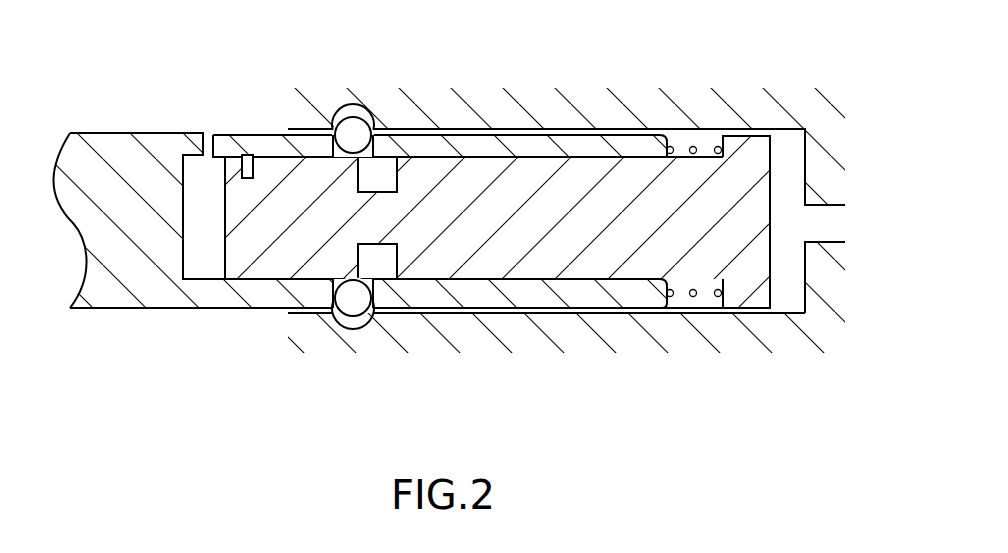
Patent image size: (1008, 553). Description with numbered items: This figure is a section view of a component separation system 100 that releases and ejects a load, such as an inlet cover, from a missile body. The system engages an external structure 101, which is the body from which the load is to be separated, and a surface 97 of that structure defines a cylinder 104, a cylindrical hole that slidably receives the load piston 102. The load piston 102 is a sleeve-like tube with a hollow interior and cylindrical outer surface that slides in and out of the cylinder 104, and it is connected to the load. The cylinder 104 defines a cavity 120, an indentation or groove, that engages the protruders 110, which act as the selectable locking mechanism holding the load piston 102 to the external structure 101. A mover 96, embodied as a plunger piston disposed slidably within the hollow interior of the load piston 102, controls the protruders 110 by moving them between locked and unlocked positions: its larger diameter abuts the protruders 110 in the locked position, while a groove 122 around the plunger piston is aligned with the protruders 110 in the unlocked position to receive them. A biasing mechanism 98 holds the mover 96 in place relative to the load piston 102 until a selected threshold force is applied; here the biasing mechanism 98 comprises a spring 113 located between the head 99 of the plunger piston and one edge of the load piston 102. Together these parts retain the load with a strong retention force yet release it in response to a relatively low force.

The mover 96 is at (740, 163).
The surface 97 is at (808, 290).
The biasing mechanism 98 is at (696, 147).
The head 99 is at (763, 210).
The component separation system 100 is at (146, 351).
The external structure 101 is at (702, 327).
The load piston 102 is at (502, 150).
The cylinder 104 is at (530, 327).
The protruder 110 is at (353, 135).
The spring 113 is at (692, 295).
The cavity 120 is at (351, 117).
The groove 122 is at (372, 190).